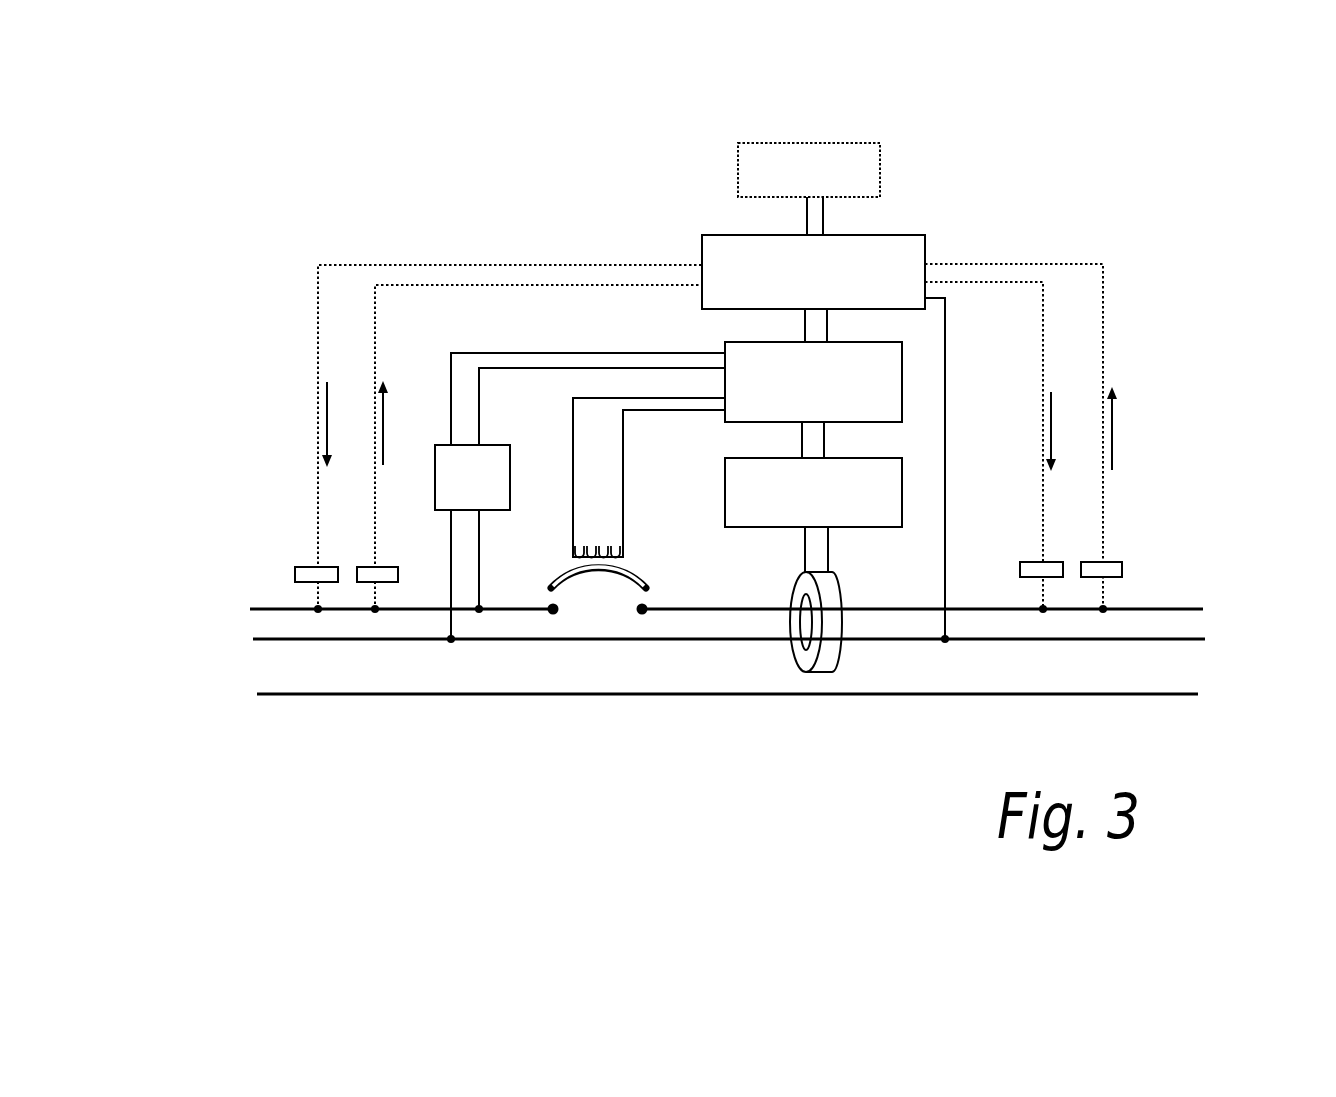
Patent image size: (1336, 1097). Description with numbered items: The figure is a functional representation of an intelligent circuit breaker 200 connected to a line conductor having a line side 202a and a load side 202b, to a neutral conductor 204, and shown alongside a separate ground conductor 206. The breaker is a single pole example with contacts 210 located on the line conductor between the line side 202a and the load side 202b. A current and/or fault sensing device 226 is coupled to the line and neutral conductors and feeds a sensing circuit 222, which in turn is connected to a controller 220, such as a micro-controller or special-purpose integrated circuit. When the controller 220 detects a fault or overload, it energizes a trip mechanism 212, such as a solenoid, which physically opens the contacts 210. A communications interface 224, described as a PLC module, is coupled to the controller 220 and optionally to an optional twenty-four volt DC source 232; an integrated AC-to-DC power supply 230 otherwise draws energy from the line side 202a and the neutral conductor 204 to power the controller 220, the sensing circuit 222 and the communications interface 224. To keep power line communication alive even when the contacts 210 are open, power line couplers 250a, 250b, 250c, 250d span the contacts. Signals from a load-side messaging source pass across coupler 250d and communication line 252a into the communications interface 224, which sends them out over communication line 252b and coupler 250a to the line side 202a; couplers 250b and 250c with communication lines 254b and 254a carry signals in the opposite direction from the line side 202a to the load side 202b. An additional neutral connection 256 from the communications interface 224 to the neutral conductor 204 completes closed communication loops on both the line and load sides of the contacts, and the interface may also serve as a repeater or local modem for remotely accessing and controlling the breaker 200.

The intelligent circuit breaker 200 is at (248, 178).
The line side of line conductor 202a is at (292, 609).
The load side of line conductor 202b is at (1148, 606).
The neutral conductor 204 is at (315, 641).
The ground conductor 206 is at (382, 695).
The circuit breaker contacts 210 is at (600, 574).
The trip mechanism 212 is at (647, 557).
The controller 220 is at (902, 385).
The sensing circuit 222 is at (903, 500).
The communications interface 224 is at (925, 243).
The current and/or fault sensing device 226 is at (832, 655).
The AC-to-DC power supply 230 is at (492, 445).
The optional 24 VDC power source 232 is at (880, 158).
The power line coupler 250a is at (308, 566).
The power line coupler 250b is at (380, 566).
The power line coupler 250c is at (1032, 561).
The power line coupler 250d is at (1110, 561).
The communication line 252a is at (1058, 264).
The communication line 252b is at (400, 265).
The communication line 254a is at (985, 282).
The communication line 254b is at (475, 285).
The neutral connection 256 is at (945, 398).